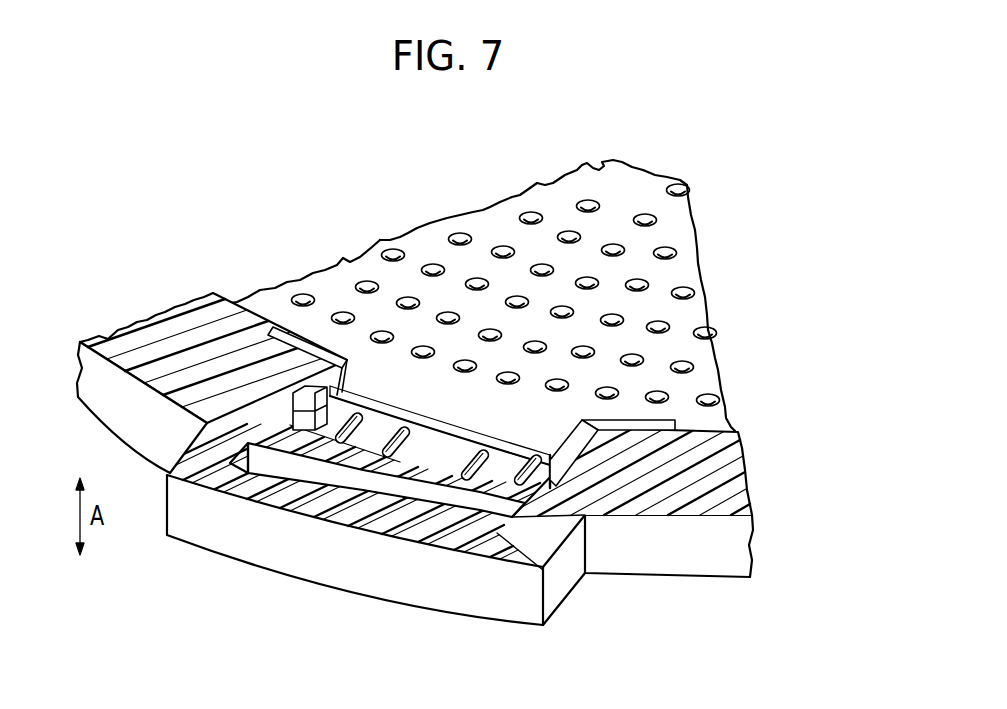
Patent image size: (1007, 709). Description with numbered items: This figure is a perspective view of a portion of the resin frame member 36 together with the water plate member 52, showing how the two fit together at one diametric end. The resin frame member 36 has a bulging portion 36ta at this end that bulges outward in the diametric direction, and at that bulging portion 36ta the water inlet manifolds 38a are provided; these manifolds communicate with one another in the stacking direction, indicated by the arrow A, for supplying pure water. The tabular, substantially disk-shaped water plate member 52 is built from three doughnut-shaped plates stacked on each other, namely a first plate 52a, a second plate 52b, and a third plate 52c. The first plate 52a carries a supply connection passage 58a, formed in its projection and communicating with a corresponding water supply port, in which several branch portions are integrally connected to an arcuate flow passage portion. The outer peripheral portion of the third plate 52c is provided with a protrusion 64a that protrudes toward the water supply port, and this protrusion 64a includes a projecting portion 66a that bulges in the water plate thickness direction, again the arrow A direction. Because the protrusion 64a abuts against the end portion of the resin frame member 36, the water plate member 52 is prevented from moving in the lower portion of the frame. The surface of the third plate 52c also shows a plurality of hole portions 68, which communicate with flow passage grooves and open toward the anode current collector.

The resin frame member 36 is at (248, 570).
The bulging portion 36ta is at (513, 613).
The water inlet manifold 38a is at (456, 517).
The water plate member 52 is at (468, 210).
The first plate 52a is at (437, 448).
The second plate 52b is at (376, 430).
The third plate 52c is at (405, 238).
The supply connection passage 58a is at (488, 458).
The protrusion 64a is at (348, 362).
The projecting portion 66a is at (312, 360).
The hole portion 68 is at (585, 204).